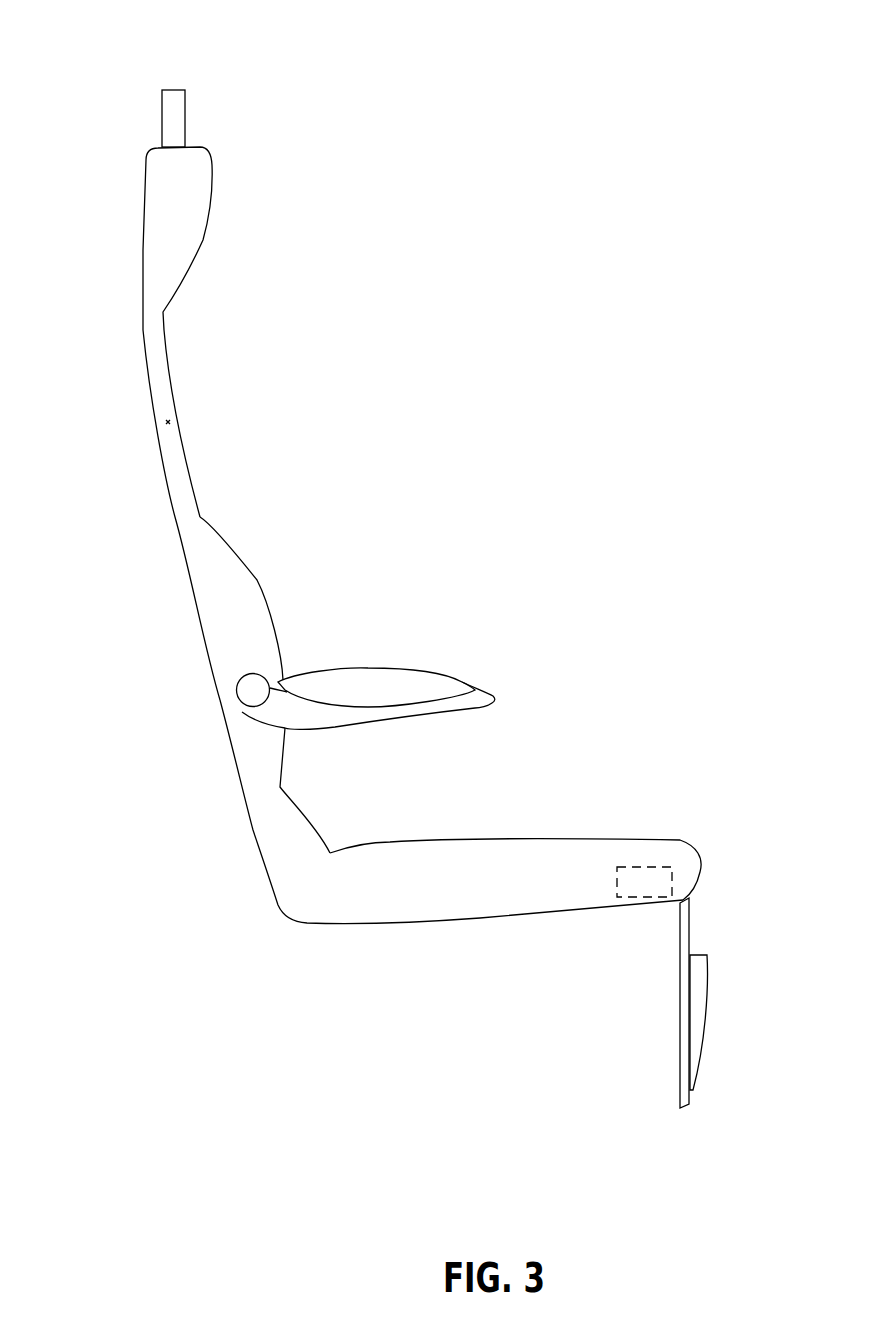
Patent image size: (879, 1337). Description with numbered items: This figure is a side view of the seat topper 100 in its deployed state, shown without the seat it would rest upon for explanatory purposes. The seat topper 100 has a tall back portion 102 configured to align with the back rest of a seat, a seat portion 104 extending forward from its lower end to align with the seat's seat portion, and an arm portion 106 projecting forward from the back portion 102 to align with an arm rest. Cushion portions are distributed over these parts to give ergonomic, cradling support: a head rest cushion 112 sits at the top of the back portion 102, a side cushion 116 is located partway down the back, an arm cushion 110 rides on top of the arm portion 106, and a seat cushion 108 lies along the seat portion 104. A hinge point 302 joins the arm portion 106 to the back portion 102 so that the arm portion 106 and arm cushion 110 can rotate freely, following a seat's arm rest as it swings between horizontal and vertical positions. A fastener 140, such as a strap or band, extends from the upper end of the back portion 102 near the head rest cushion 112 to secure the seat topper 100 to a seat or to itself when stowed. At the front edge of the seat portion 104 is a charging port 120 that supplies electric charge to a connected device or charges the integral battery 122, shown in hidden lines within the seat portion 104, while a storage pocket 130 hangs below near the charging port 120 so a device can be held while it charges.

The seat topper 100 is at (146, 42).
The back portion 102 is at (170, 368).
The seat portion 104 is at (523, 923).
The arm portion 106 is at (495, 696).
The seat cushion 108 is at (617, 838).
The arm cushion 110 is at (392, 668).
The head rest cushion 112 is at (213, 173).
The side cushion 116 is at (257, 577).
The charging port 120 is at (701, 880).
The battery 122 is at (653, 898).
The storage pocket 130 is at (707, 1009).
The fastener 140 is at (175, 90).
The hinge point 302 is at (240, 698).